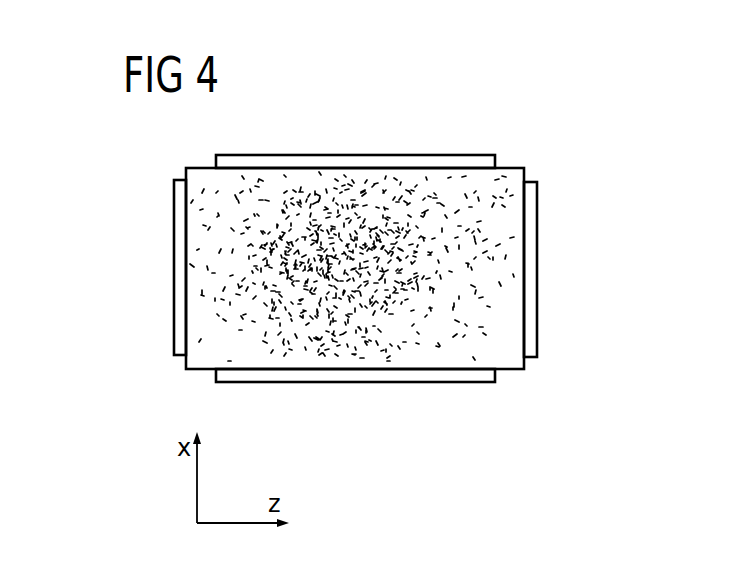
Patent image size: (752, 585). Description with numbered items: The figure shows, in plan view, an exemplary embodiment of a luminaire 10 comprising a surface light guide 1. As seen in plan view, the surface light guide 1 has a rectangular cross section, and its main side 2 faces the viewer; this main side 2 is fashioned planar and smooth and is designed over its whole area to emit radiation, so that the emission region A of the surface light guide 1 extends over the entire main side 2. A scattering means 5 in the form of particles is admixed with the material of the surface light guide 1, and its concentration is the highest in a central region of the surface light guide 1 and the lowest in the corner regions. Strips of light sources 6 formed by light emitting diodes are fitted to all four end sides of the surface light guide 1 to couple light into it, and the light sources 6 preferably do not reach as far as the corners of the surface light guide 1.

The surface light guide 1 is at (358, 270).
The main side 2 is at (360, 239).
The emission region A is at (499, 200).
The scattering means 5 is at (497, 243).
The light sources 6 is at (352, 156).
The luminaire 10 is at (405, 270).